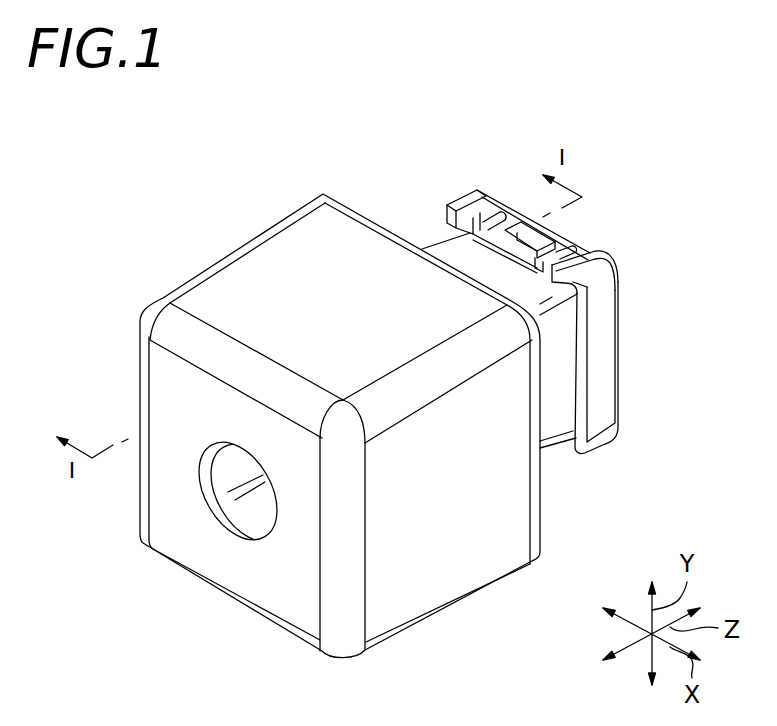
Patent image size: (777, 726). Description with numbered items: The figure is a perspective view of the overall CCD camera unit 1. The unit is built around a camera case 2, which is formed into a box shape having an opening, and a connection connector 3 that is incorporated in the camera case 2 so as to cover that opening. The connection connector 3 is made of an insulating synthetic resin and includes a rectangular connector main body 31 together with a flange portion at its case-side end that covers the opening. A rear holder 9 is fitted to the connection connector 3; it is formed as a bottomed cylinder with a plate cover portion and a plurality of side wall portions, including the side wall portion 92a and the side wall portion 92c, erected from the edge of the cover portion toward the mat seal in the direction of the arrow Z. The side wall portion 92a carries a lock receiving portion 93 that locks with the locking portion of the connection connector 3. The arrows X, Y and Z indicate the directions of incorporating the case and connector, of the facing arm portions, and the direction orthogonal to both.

The CCD camera unit 1 is at (414, 348).
The camera case 2 is at (250, 237).
The connection connector 3 is at (427, 242).
The connector main body 31 is at (447, 245).
The rear holder 9 is at (568, 279).
The side wall portion 92a is at (578, 262).
The side wall portion 92c is at (604, 348).
The lock receiving portion 93 is at (553, 234).